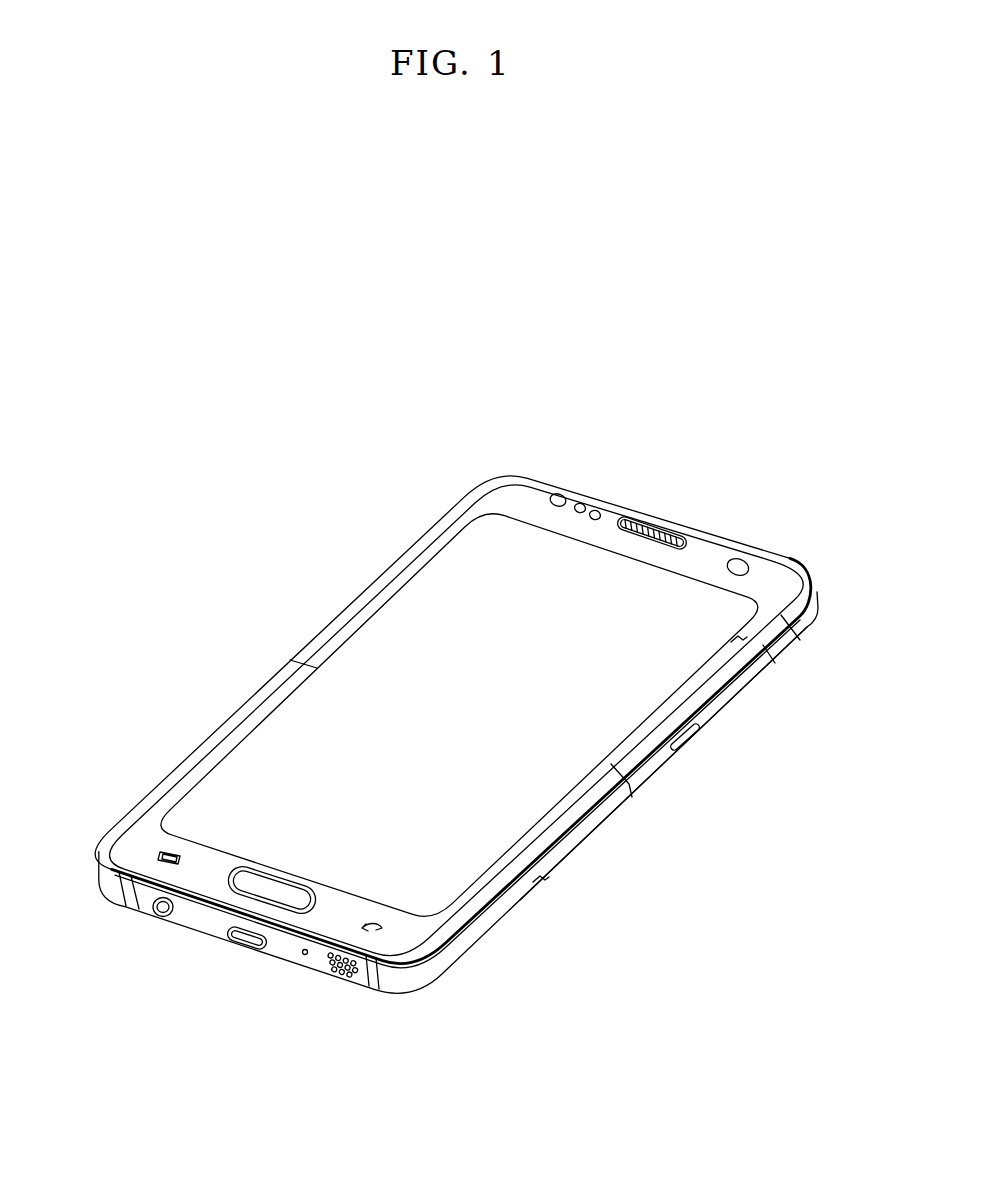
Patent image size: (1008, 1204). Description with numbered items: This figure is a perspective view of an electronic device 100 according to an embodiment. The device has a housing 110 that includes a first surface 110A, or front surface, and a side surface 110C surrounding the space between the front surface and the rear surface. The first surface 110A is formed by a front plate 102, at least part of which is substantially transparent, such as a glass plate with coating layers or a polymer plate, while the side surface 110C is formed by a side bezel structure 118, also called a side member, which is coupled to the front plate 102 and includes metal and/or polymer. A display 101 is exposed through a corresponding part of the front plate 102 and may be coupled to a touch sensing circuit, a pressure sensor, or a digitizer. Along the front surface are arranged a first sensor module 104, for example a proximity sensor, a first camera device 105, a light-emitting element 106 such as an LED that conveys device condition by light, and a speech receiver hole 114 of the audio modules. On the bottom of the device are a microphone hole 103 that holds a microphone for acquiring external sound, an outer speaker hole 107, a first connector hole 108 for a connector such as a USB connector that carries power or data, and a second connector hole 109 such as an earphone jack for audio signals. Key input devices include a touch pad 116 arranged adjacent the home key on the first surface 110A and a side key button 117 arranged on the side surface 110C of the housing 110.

The electronic device 100 is at (271, 635).
The display 101 is at (272, 767).
The front plate 102 is at (774, 570).
The microphone hole 103 is at (300, 955).
The first sensor module 104 is at (585, 503).
The first camera device 105 is at (742, 557).
The light-emitting element 106 is at (556, 493).
The outer speaker hole 107 is at (331, 975).
The first connector hole 108 is at (233, 948).
The second connector hole 109 is at (153, 915).
The housing 110 is at (617, 807).
The first surface 110A is at (436, 623).
The side surface 110C is at (540, 879).
The speech receiver hole 114 is at (648, 526).
The touch pad 116 is at (123, 885).
The side key button 117 is at (695, 744).
The side bezel structure 118 is at (747, 678).